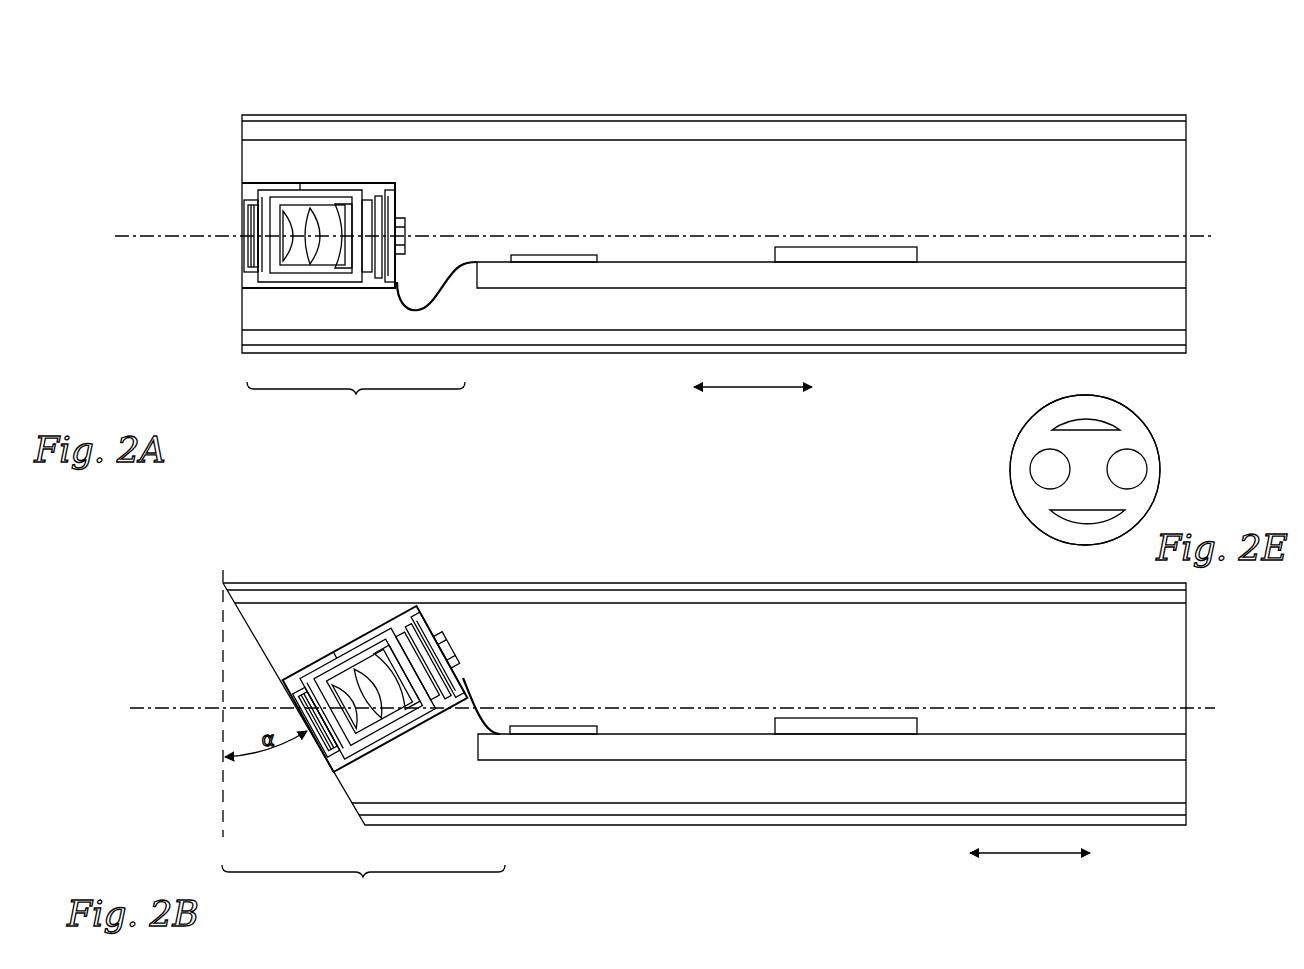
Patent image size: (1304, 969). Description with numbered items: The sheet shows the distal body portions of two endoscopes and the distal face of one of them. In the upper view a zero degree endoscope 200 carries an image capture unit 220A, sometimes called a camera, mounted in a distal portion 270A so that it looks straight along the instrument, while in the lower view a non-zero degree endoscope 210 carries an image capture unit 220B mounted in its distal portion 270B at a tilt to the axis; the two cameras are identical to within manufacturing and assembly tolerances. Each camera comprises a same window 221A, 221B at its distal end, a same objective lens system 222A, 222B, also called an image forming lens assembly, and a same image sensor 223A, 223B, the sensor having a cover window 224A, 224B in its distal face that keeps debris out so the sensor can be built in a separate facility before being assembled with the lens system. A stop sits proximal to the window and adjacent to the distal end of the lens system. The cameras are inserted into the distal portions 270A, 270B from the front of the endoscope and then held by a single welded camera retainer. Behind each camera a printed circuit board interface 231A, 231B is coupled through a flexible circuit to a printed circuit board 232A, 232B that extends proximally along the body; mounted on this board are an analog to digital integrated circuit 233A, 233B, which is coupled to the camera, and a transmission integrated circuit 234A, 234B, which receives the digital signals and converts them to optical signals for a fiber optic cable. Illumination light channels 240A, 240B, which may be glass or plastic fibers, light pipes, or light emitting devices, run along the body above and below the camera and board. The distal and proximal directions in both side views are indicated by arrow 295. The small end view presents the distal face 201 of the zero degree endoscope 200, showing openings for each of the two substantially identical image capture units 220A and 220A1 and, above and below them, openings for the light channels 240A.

In FIG. 2A, the zero degree endoscope 200 is at (714, 181).
In FIG. 2E, the zero degree endoscope 200 is at (1120, 454).
In FIG. 2E, the distal face 201 is at (1066, 465).
In FIG. 2B, the non-zero degree endoscope 210 is at (704, 646).
In FIG. 2A, the image capture unit 220A is at (318, 179).
In FIG. 2E, the image capture unit 220A is at (1168, 475).
In FIG. 2E, the image capture unit 220A1 is at (999, 477).
In FIG. 2B, the image capture unit 220B is at (375, 647).
In FIG. 2A, the window 221A is at (214, 261).
In FIG. 2B, the window 221B is at (292, 748).
In FIG. 2A, the objective lens system 222A is at (273, 300).
In FIG. 2B, the objective lens system 222B is at (427, 763).
In FIG. 2A, the image sensor 223A is at (414, 214).
In FIG. 2B, the image sensor 223B is at (450, 613).
In FIG. 2A, the cover window 224A is at (391, 149).
In FIG. 2B, the cover window 224B is at (427, 580).
In FIG. 2A, the printed circuit board interface 231A is at (444, 212).
In FIG. 2B, the printed circuit board interface 231B is at (478, 637).
In FIG. 2A, the printed circuit board 232A is at (831, 297).
In FIG. 2B, the printed circuit board 232B is at (832, 765).
In FIG. 2A, the analog to digital integrated circuit 233A is at (560, 220).
In FIG. 2B, the analog to digital integrated circuit 233B is at (581, 668).
In FIG. 2A, the transmission integrated circuit 234A is at (846, 218).
In FIG. 2B, the transmission integrated circuit 234B is at (846, 683).
In FIG. 2A, the illumination light channel 240A is at (1013, 337).
In FIG. 2E, the illumination light channel 240A is at (1085, 518).
In FIG. 2B, the illumination light channel 240B is at (963, 808).
In FIG. 2A, the distal portion 270A is at (356, 407).
In FIG. 2B, the distal portion 270B is at (363, 885).
In FIG. 2A, the arrow 295 is at (759, 407).
In FIG. 2B, the arrow 295 is at (1039, 885).